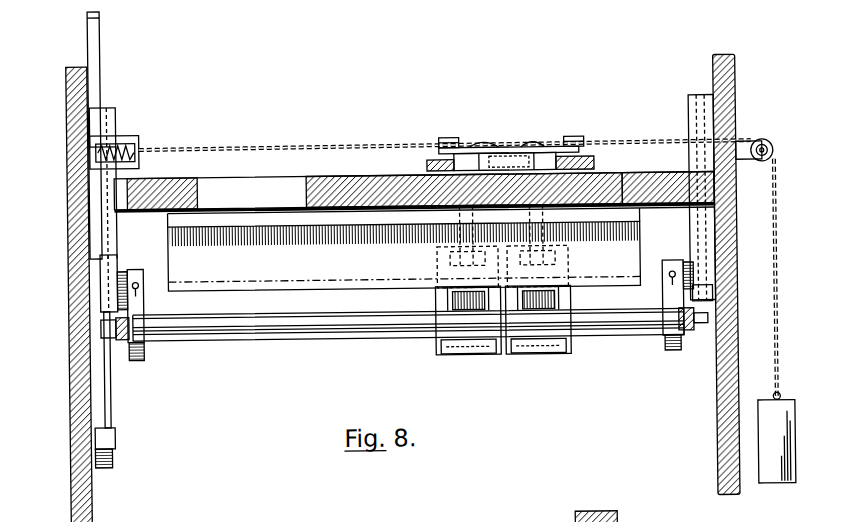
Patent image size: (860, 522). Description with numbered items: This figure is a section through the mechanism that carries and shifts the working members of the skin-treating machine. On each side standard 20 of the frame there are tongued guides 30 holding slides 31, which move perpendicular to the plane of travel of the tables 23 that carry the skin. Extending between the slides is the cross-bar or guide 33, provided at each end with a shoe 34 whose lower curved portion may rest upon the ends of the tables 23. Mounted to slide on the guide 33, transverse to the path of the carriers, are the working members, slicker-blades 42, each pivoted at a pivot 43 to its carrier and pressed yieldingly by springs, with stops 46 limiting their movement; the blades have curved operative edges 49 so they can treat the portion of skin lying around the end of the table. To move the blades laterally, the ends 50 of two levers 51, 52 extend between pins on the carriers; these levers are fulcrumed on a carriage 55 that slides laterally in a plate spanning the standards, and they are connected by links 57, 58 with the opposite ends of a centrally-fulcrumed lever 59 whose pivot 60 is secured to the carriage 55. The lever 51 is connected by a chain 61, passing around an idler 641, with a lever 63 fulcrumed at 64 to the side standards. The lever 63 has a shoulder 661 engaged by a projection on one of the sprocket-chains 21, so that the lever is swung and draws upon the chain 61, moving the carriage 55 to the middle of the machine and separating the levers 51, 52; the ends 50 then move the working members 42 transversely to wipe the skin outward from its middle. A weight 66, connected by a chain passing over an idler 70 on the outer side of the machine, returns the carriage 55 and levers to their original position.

The side standards 20 is at (92, 504).
The sprocket-chains 21 is at (150, 307).
The tables 23 is at (268, 328).
The tongued guides 30 is at (114, 106).
The slides 31 is at (97, 311).
The cross-bar or guide 33 is at (258, 296).
The shoe 34 is at (135, 354).
The slicker-blades 42 is at (463, 340).
The pivot 43 is at (440, 312).
The stops 46 is at (477, 355).
The curved operative edges 49 is at (450, 247).
The lever ends 50 is at (437, 290).
The lever 51 is at (437, 163).
The lever 52 is at (590, 160).
The carriage 55 is at (345, 185).
The link 57 is at (460, 147).
The link 58 is at (565, 143).
The centrally-fulcrumed lever 59 is at (500, 152).
The pivot or fulcrum 60 is at (495, 165).
The chain or flexible connection 61 is at (334, 145).
The lever 63 is at (105, 53).
The fulcrum 64 is at (113, 454).
The weight 66 is at (771, 488).
The idler 70 is at (769, 150).
The idler 641 is at (141, 143).
The shoulder 661 is at (110, 341).